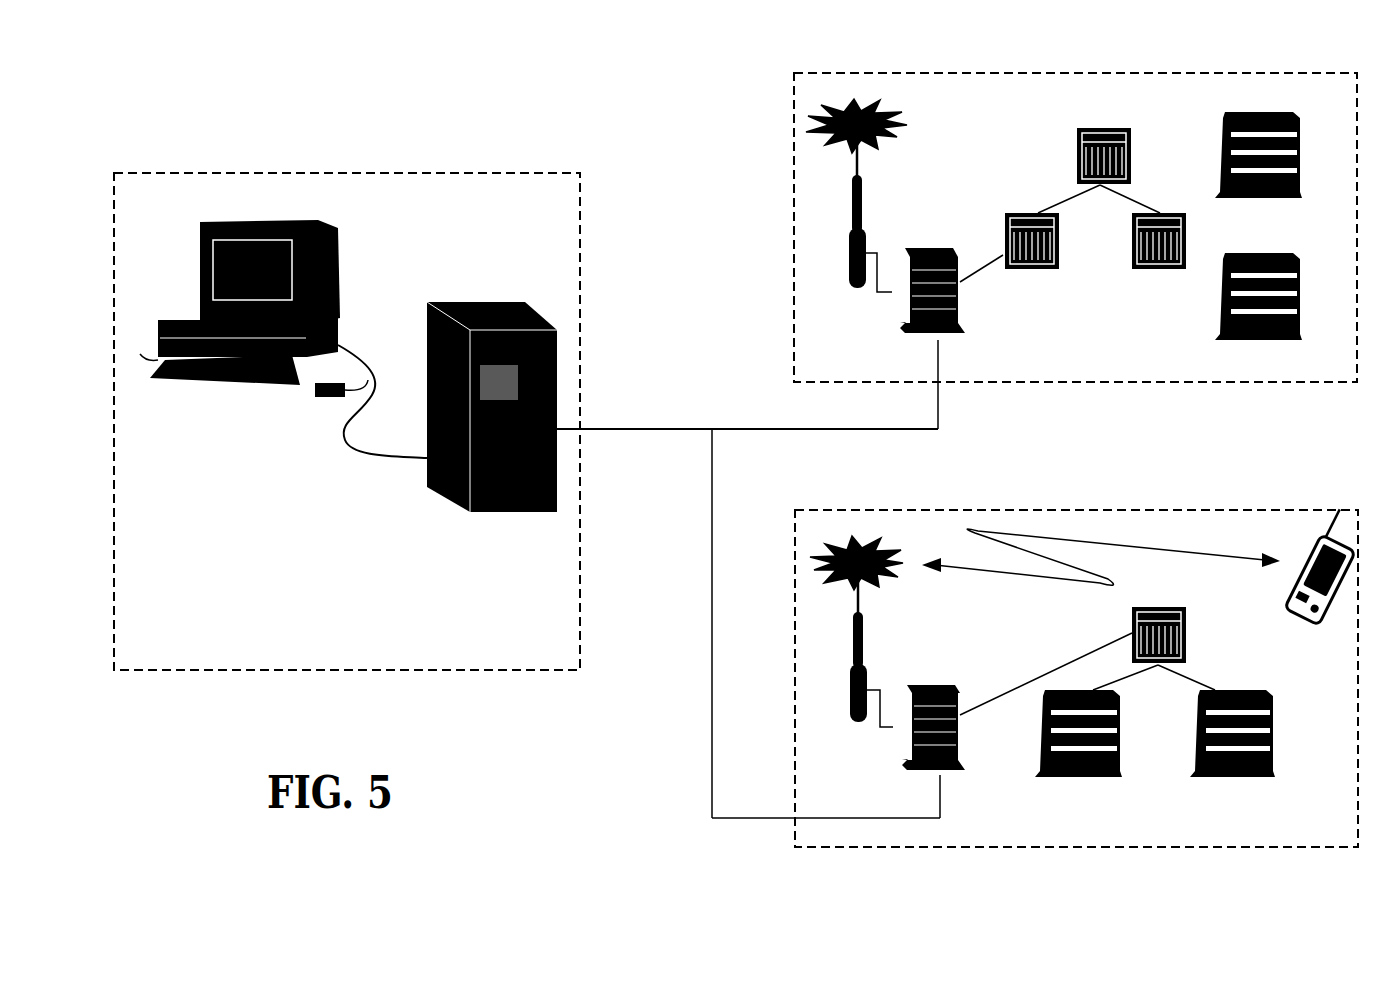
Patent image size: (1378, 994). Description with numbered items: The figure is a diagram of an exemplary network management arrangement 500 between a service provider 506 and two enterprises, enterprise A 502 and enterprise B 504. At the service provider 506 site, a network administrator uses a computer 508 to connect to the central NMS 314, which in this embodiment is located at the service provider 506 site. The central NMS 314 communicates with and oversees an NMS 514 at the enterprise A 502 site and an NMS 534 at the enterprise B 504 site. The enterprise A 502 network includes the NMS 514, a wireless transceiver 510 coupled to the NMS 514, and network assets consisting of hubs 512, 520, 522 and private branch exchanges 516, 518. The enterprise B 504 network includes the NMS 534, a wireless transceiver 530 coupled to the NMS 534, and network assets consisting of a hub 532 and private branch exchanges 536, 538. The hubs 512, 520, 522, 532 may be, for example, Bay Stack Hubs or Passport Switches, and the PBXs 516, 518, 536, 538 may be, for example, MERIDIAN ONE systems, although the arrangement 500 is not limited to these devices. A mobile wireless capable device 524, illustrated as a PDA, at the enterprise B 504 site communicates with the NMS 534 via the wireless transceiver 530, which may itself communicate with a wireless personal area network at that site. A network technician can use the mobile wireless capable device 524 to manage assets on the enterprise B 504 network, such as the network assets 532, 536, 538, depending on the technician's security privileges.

The network management arrangement 500 is at (500, 62).
The enterprise A 502 is at (779, 80).
The enterprise B 504 is at (1100, 500).
The service provider 506 is at (598, 253).
The computer 508 is at (342, 277).
The central NMS 314 is at (487, 300).
The wireless transceiver 510 is at (848, 272).
The hub 512 is at (1050, 278).
The NMS 514 is at (930, 240).
The private branch exchange 516 is at (1307, 175).
The private branch exchange 518 is at (1307, 315).
The hub 520 is at (1104, 122).
The hub 522 is at (1135, 272).
The mobile wireless capable device 524 is at (1330, 620).
The wireless transceiver 530 is at (848, 722).
The hub 532 is at (1205, 633).
The NMS 534 is at (933, 675).
The private branch exchange 536 is at (1020, 725).
The private branch exchange 538 is at (1282, 757).